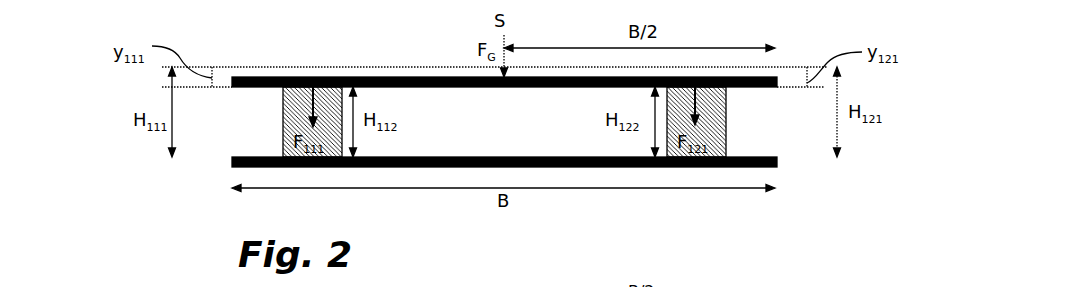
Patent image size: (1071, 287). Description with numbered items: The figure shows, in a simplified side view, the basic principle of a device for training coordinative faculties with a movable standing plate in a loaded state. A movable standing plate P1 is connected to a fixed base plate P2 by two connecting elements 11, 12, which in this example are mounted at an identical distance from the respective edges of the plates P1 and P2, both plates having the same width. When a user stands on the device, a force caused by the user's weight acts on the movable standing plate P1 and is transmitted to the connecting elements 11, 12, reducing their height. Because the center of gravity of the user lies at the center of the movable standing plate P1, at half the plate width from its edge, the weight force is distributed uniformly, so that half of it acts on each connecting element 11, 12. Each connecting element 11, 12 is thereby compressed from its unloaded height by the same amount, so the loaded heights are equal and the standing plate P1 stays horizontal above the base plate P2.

The connecting element 11 is at (283, 128).
The connecting element 12 is at (735, 128).
The movable standing plate P1 is at (242, 77).
The fixed base plate P2 is at (232, 167).